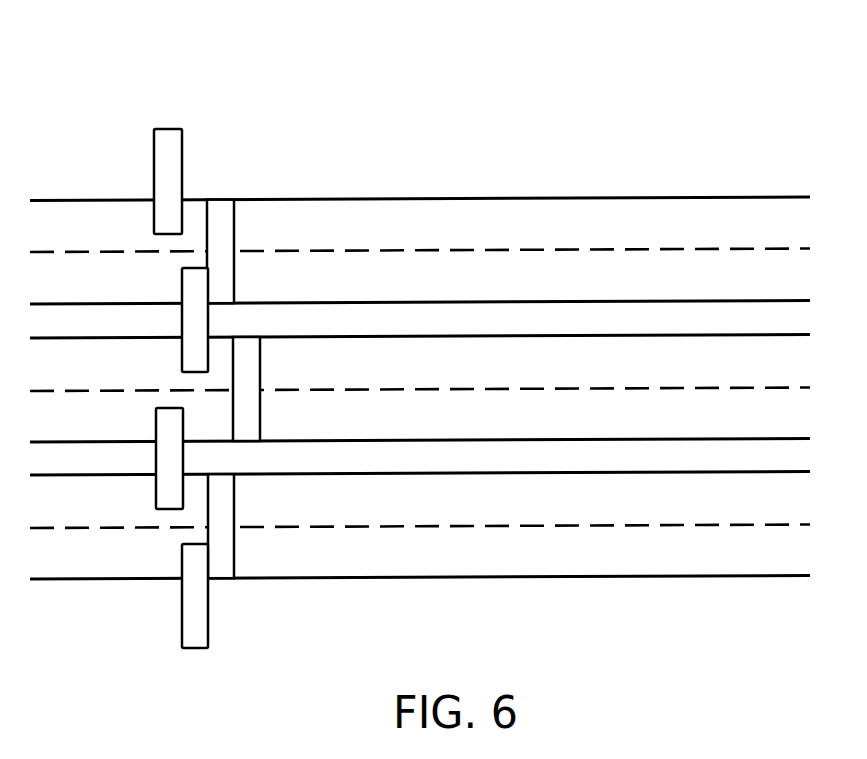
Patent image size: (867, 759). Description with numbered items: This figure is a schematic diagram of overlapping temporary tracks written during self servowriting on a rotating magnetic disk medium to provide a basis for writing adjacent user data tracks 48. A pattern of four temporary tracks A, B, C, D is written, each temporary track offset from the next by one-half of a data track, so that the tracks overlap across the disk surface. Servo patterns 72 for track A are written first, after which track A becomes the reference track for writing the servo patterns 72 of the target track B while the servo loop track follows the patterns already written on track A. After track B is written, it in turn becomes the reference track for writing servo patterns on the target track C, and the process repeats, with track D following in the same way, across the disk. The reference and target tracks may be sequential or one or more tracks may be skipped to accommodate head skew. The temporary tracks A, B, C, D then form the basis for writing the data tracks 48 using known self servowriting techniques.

The data tracks 48 is at (613, 249).
The servo patterns 72 is at (172, 129).
The temporary track A is at (199, 268).
The temporary track B is at (220, 389).
The temporary track C is at (195, 458).
The temporary track D is at (246, 389).